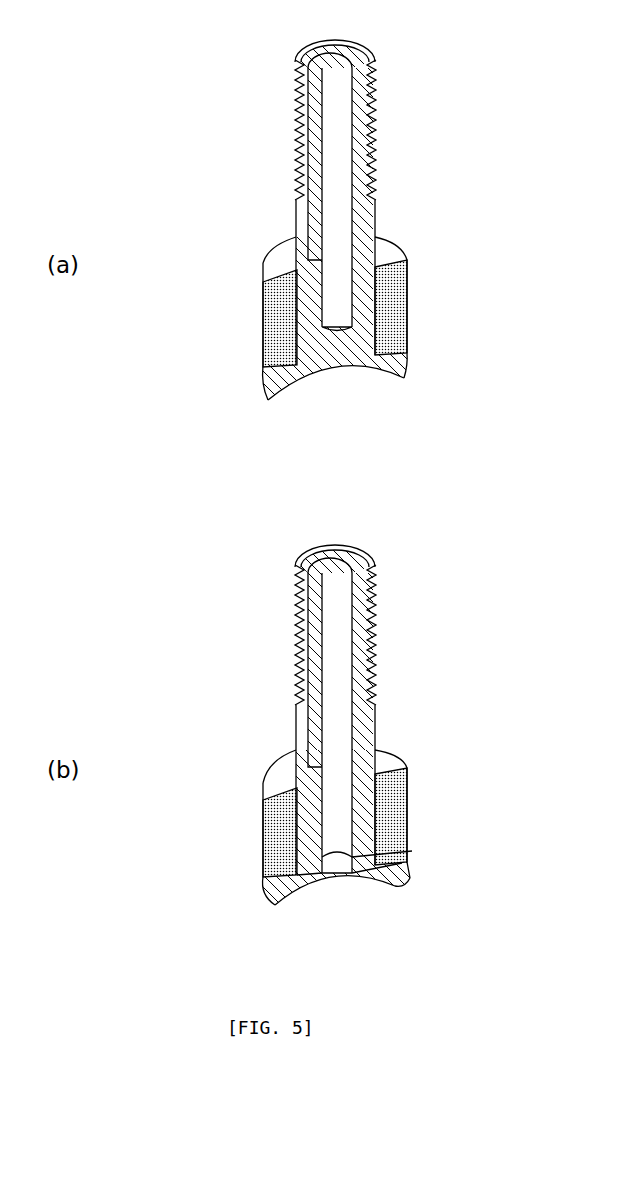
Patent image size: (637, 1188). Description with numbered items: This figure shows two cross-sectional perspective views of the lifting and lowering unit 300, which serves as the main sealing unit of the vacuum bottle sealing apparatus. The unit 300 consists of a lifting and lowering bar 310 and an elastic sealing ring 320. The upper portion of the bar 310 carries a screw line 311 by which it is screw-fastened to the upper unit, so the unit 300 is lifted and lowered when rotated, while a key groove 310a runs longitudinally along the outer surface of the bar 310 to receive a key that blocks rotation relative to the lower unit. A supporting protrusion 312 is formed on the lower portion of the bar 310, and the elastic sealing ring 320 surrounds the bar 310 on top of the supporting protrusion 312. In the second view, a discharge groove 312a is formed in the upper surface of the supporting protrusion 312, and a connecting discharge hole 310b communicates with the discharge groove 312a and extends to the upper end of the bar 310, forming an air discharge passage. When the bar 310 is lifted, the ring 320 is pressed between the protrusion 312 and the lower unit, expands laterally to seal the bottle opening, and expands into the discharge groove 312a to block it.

The lifting and lowering unit 300 is at (194, 50).
The lifting and lowering bar 310 is at (337, 374).
The key groove 310a is at (297, 233).
The connecting discharge hole 310b is at (343, 718).
The screw line 311 is at (377, 118).
The supporting protrusion 312 is at (390, 363).
The discharge groove 312a is at (412, 852).
The elastic sealing ring 320 is at (378, 301).